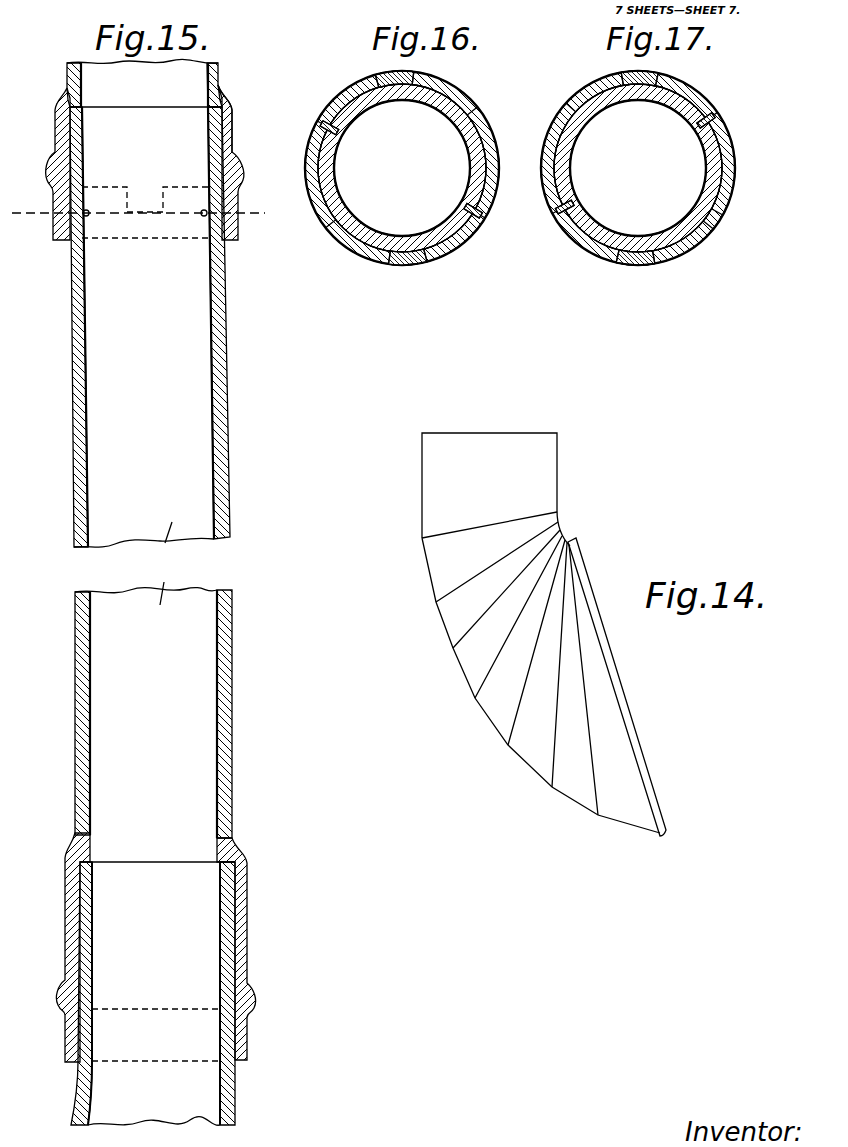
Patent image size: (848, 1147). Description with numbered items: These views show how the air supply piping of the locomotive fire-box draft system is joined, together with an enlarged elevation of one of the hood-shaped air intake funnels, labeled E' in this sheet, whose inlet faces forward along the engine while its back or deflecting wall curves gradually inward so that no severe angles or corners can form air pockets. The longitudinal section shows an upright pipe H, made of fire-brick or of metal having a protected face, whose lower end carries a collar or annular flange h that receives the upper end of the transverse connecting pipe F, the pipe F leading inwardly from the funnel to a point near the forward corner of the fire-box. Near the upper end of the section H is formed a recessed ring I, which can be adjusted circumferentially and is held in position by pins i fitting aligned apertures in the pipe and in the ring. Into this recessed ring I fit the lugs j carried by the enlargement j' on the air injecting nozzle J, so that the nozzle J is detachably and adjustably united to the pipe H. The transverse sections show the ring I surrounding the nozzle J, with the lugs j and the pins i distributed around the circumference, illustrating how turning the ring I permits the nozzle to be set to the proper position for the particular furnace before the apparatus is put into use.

In FIG. 15, the air injecting nozzle J is at (144, 83).
In FIG. 16, the air injecting nozzle J is at (432, 103).
In FIG. 17, the air injecting nozzle J is at (657, 238).
In FIG. 15, the recessed ring I is at (58, 244).
In FIG. 16, the recessed ring I is at (307, 171).
In FIG. 17, the recessed ring I is at (735, 150).
In FIG. 15, the lug j is at (138, 195).
In FIG. 16, the lug j is at (382, 174).
In FIG. 17, the lug j is at (623, 174).
In FIG. 15, the enlargement j' is at (233, 118).
In FIG. 15, the pin i is at (88, 218).
In FIG. 16, the pin i is at (339, 131).
In FIG. 17, the pin i is at (700, 128).
In FIG. 15, the upright pipe H is at (151, 472).
In FIG. 15, the collar or annular flange h is at (248, 948).
In FIG. 15, the transverse connecting pipe F is at (153, 993).
In FIG. 14, the segmental fan / elbow blank E' is at (536, 634).